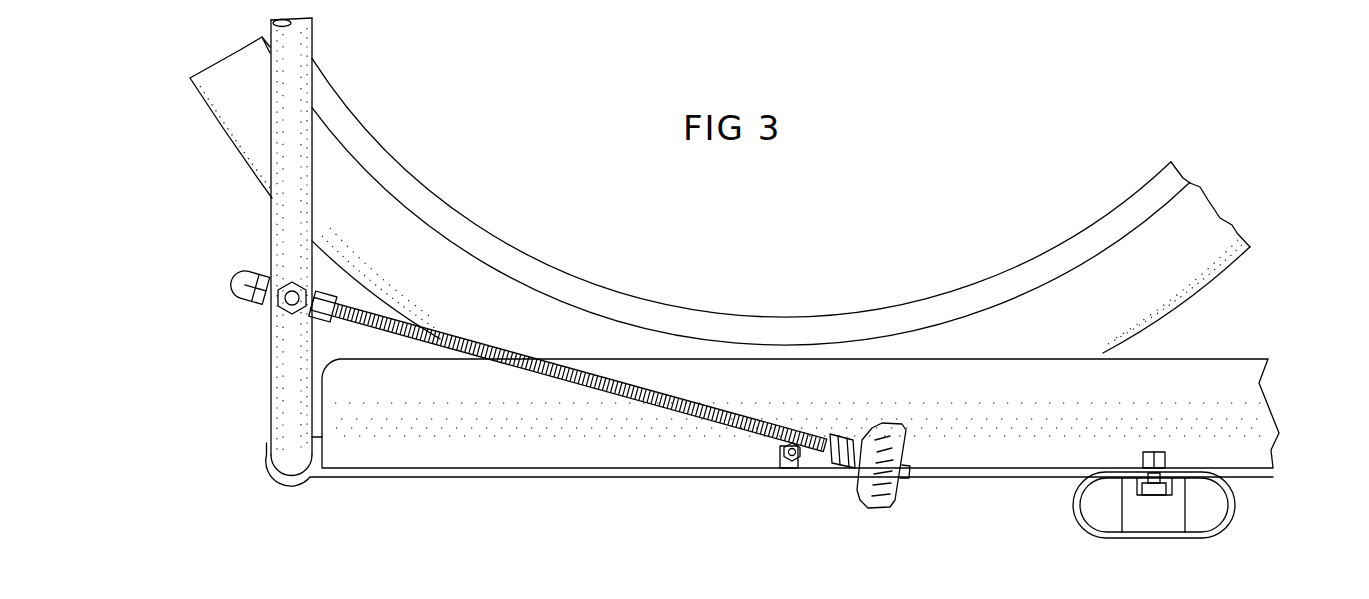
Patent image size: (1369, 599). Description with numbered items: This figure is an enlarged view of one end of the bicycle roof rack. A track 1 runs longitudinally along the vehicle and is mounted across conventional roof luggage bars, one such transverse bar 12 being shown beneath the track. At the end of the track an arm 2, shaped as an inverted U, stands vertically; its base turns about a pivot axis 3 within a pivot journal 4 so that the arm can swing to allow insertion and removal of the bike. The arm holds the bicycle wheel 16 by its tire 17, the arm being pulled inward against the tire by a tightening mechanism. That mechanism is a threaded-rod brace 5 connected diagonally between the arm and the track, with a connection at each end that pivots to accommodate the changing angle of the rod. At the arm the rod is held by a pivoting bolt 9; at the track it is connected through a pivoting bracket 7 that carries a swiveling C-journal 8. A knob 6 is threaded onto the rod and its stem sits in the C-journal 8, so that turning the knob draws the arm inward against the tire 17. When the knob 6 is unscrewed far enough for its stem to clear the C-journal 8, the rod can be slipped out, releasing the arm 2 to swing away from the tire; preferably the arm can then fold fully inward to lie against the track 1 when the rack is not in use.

The track 1 is at (1245, 358).
The arm 2 is at (313, 40).
The pivot axis of arm 3 is at (292, 458).
The pivot journal of arm 4 is at (268, 463).
The threaded-rod brace for pivoting arm 5 is at (492, 350).
The knob 6 is at (880, 511).
The pivoting bracket 7 is at (791, 463).
The C-journal 8 is at (836, 468).
The pivoting bolt 9 is at (292, 300).
The transverse bar 12 is at (1224, 518).
The wheel 16 is at (926, 298).
The tire 17 is at (1232, 225).